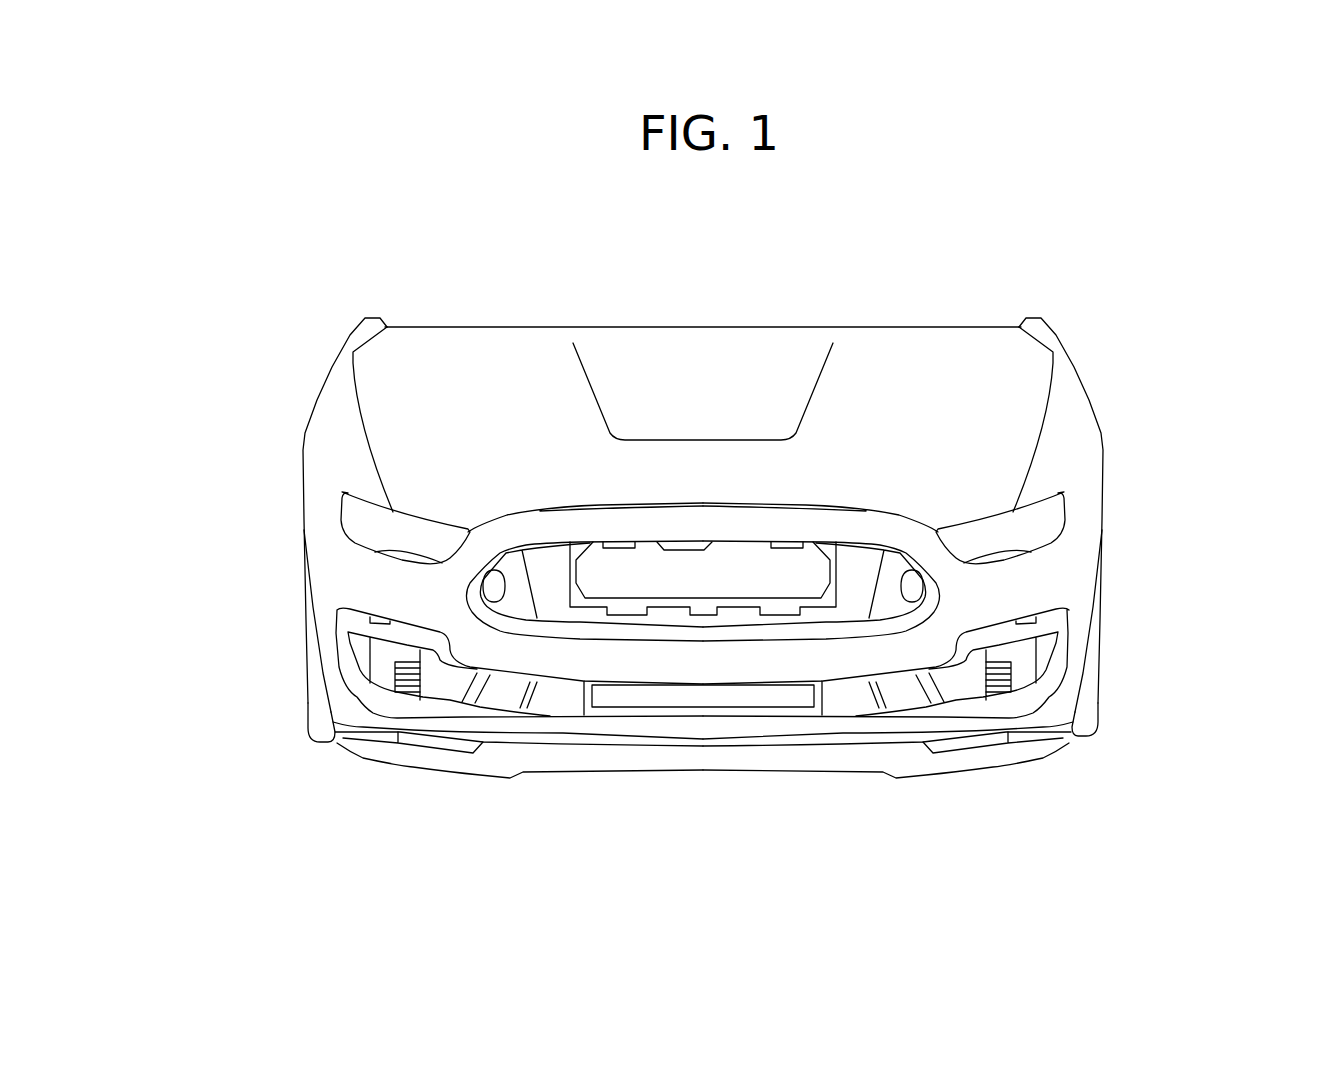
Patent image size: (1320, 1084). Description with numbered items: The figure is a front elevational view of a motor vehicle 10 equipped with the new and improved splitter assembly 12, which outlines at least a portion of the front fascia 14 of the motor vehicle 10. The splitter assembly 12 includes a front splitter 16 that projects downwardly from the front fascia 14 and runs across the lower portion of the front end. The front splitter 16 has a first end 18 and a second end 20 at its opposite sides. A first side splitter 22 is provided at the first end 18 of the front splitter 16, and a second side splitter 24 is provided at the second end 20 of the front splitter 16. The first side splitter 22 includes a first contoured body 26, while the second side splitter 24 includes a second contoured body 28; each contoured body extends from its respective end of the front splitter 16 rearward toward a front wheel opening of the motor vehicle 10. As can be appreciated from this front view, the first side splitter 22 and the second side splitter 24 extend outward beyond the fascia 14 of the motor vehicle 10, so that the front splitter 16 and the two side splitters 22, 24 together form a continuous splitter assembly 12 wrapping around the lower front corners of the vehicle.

The motor vehicle 10 is at (704, 551).
The splitter assembly 12 is at (698, 750).
The front fascia 14 is at (775, 662).
The front splitter 16 is at (698, 796).
The first end 18 is at (1067, 747).
The second end 20 is at (342, 742).
The first side splitter 22 is at (1123, 686).
The second side splitter 24 is at (283, 681).
The first contoured body 26 is at (1097, 719).
The second contoured body 28 is at (313, 719).